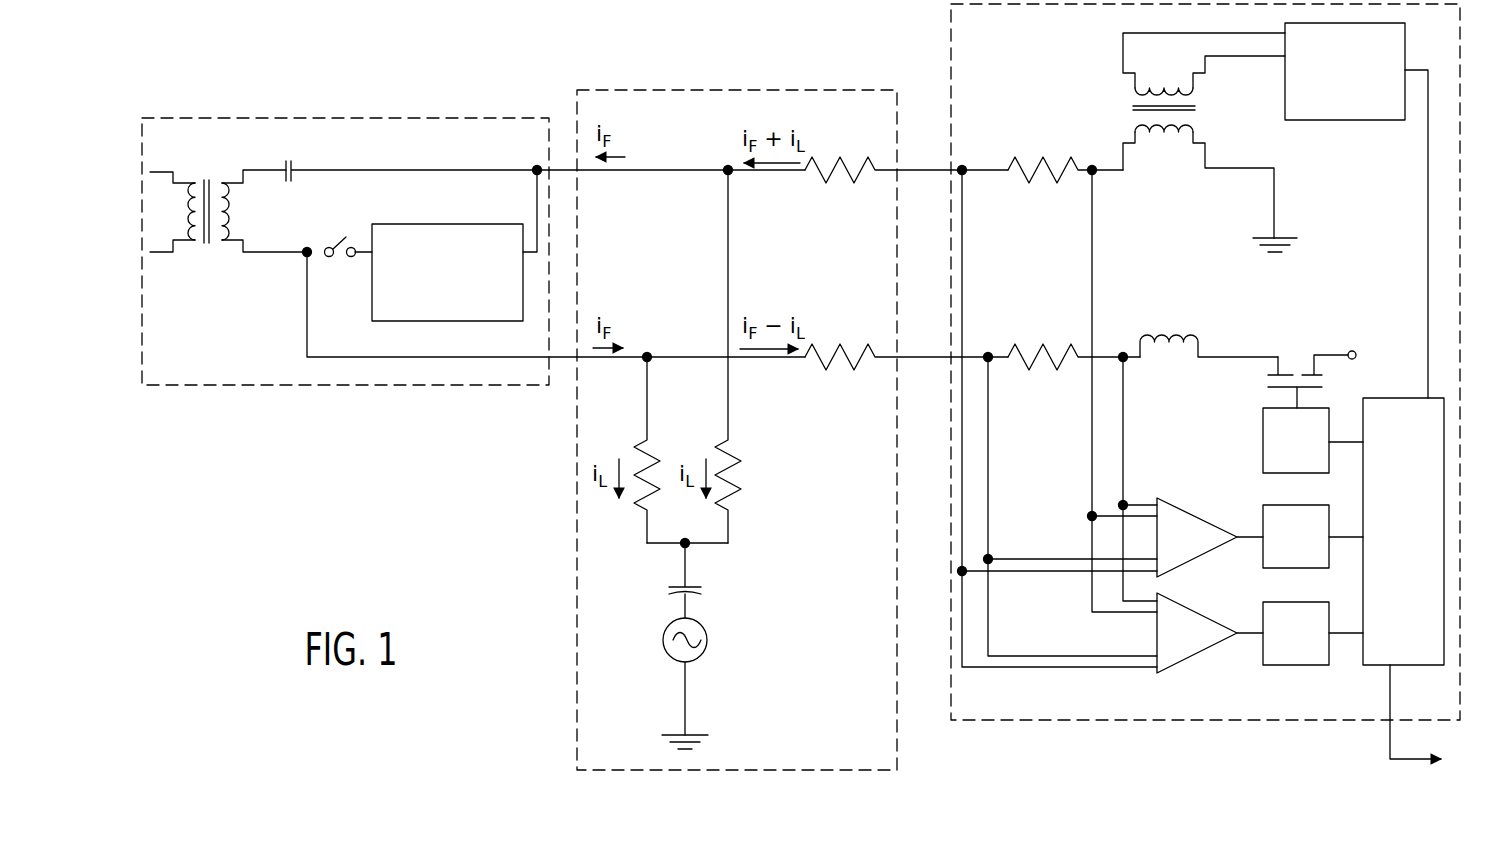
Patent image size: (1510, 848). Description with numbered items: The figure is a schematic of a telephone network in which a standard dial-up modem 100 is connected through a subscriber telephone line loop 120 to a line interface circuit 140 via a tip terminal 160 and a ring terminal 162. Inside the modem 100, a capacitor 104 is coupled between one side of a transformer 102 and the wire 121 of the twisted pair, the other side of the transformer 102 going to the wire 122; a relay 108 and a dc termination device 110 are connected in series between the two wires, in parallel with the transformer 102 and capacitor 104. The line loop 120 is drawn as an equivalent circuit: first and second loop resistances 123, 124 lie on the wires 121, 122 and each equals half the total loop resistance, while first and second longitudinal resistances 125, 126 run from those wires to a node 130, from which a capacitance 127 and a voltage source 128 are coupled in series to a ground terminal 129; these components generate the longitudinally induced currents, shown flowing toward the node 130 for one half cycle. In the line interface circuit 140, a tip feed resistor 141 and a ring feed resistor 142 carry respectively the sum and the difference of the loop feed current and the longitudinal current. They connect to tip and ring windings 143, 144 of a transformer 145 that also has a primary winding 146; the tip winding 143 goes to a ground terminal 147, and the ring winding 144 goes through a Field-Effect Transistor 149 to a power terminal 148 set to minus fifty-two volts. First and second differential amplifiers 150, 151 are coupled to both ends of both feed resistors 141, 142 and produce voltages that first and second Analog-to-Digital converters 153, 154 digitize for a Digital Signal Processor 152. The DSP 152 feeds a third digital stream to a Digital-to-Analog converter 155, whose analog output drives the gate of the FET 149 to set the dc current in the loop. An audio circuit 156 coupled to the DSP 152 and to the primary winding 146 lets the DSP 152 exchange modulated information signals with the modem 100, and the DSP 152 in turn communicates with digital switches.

The standard dial-up modem 100 is at (290, 118).
The transformer 102 is at (197, 174).
The capacitor 104 is at (294, 167).
The relay 108 is at (342, 236).
The dc termination device 110 is at (429, 315).
The subscriber telephone line loop 120 is at (712, 90).
The wire of the twisted pair 121 is at (668, 170).
The wire of the twisted pair 122 is at (638, 356).
The first loop resistance 123 is at (829, 158).
The second loop resistance 124 is at (829, 345).
The first longitudinal resistance 125 is at (735, 441).
The second longitudinal resistance 126 is at (641, 443).
The capacitance 127 is at (693, 582).
The voltage source 128 is at (707, 640).
The ground terminal 129 is at (700, 742).
The node 130 is at (657, 545).
The line interface circuit 140 is at (950, 42).
The tip feed resistor 141 is at (1030, 160).
The ring feed resistor 142 is at (1030, 347).
The tip winding 143 is at (1202, 125).
The ring winding 144 is at (1160, 335).
The transformer 145 is at (1182, 135).
The primary winding 146 is at (1202, 92).
The ground terminal 147 is at (1285, 238).
The power terminal 148 is at (1350, 350).
The Field-Effect Transistor 149 is at (1322, 389).
The first differential amplifier 150 is at (1188, 498).
The second differential amplifier 151 is at (1212, 608).
The Digital Signal Processor 152 is at (1385, 560).
The first Analog-to-Digital converter 153 is at (1278, 565).
The second Analog-to-Digital converter 154 is at (1278, 662).
The Digital-to-Analog converter 155 is at (1278, 469).
The audio circuit 156 is at (1327, 114).
The tip terminal 160 is at (915, 168).
The ring terminal 162 is at (915, 355).